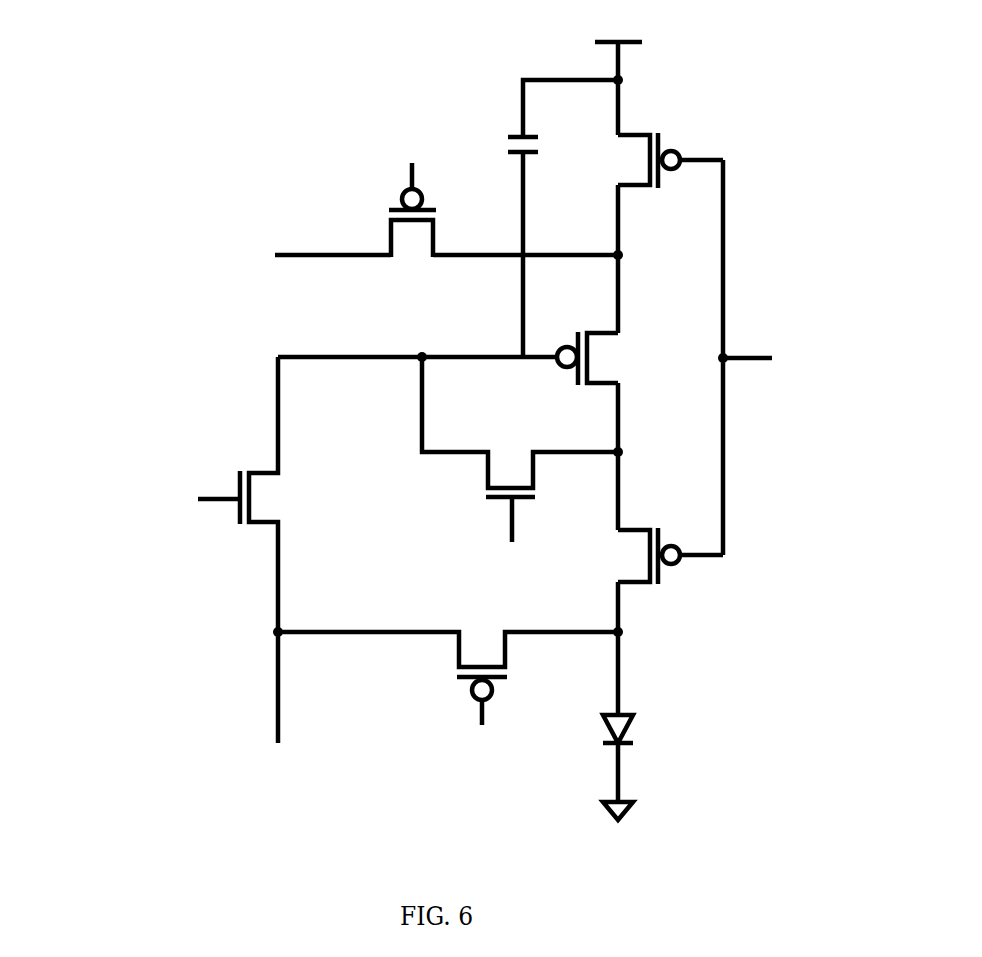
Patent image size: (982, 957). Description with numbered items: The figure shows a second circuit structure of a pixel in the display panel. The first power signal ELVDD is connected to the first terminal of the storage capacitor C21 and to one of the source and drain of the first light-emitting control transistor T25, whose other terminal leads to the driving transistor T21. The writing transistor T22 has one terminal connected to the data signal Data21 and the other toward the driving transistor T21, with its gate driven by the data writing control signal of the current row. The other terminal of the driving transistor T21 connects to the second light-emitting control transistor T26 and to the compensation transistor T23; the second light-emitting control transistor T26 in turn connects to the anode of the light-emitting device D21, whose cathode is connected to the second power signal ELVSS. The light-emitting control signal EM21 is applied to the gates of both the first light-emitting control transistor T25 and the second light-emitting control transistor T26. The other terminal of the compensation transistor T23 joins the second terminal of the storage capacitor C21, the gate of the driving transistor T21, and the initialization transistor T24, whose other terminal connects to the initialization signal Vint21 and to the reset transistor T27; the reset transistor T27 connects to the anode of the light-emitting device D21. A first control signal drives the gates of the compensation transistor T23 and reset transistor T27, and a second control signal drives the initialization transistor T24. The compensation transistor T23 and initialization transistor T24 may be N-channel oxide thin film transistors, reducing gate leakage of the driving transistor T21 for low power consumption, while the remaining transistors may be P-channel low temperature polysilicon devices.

The driving transistor T21 is at (457, 358).
The writing transistor T22 is at (412, 224).
The compensation transistor T23 is at (520, 449).
The initialization transistor T24 is at (250, 494).
The first light-emitting control transistor T25 is at (659, 160).
The second light-emitting control transistor T26 is at (660, 556).
The reset transistor T27 is at (448, 665).
The storage capacitor C21 is at (563, 218).
The light-emitting device D21 is at (642, 758).
The light-emitting control signal EM21 is at (780, 357).
The first power signal ELVDD is at (619, 73).
The second power signal ELVSS is at (618, 828).
The data signal Data21 is at (400, 255).
The initialization signal Vint21 is at (280, 700).